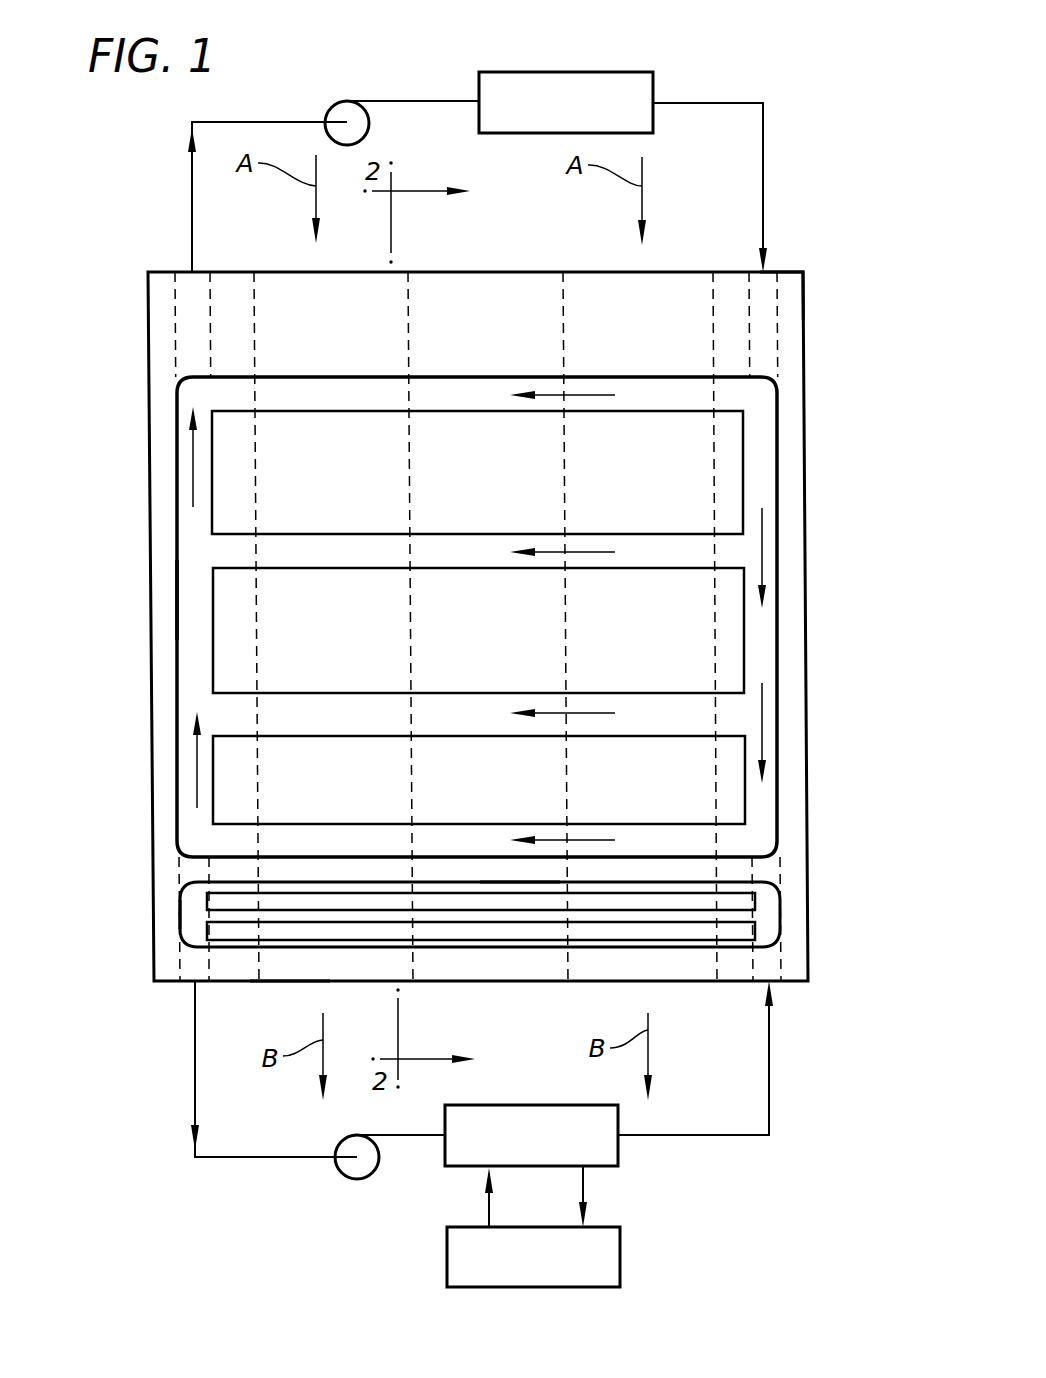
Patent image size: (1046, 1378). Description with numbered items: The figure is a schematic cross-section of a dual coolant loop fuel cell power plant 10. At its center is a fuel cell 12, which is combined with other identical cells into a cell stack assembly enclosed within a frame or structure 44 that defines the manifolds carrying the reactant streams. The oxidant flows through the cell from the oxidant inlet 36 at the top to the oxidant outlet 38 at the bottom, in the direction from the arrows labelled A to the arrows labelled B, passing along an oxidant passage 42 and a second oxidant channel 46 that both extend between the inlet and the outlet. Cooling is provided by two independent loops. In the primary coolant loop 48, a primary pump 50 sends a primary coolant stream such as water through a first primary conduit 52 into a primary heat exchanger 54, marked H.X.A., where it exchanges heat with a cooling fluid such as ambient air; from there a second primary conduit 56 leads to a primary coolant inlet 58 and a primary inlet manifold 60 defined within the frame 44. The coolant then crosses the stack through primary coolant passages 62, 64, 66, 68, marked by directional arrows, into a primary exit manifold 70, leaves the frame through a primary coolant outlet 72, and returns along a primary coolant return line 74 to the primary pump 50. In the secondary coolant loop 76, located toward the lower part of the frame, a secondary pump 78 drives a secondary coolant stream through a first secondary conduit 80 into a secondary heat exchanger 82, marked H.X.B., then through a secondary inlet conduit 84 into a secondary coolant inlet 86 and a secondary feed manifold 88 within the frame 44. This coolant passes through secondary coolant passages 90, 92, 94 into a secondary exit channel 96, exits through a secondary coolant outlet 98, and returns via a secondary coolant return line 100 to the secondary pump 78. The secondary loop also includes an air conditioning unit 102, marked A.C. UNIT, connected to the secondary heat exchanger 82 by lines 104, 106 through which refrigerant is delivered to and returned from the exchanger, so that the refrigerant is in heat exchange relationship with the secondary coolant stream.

The dual coolant loop fuel cell power plant 10 is at (825, 130).
The fuel cell 12 is at (505, 285).
The oxidant inlet 36 is at (409, 272).
The oxidant outlet 38 is at (287, 981).
The oxidant passage 42 is at (305, 298).
The frame or structure 44 is at (797, 290).
The second oxidant channel 46 is at (650, 298).
The primary coolant loop 48 is at (415, 58).
The primary pump 50 is at (338, 106).
The first primary conduit 52 is at (412, 102).
The primary heat exchanger 54 is at (608, 72).
The second primary conduit 56 is at (763, 128).
The primary coolant inlet 58 is at (763, 332).
The primary inlet manifold 60 is at (765, 632).
The primary coolant passage 62 is at (666, 400).
The primary coolant passage 64 is at (663, 553).
The primary coolant passage 66 is at (655, 713).
The primary coolant passage 68 is at (665, 842).
The primary exit manifold 70 is at (193, 587).
The primary coolant outlet 72 is at (189, 299).
The primary coolant return line 74 is at (191, 191).
The secondary coolant loop 76 is at (325, 1215).
The secondary pump 78 is at (340, 1140).
The first secondary conduit 80 is at (400, 1137).
The secondary heat exchanger 82 is at (520, 1105).
The secondary inlet conduit 84 is at (770, 1100).
The secondary coolant inlet 86 is at (773, 967).
The secondary feed manifold 88 is at (768, 920).
The secondary coolant passage 90 is at (613, 945).
The secondary coolant passage 92 is at (677, 917).
The secondary coolant passage 94 is at (515, 888).
The secondary exit channel 96 is at (192, 920).
The secondary coolant outlet 98 is at (188, 968).
The secondary coolant return line 100 is at (195, 1043).
The air conditioning unit 102 is at (620, 1252).
The air conditioning supply line 104 is at (485, 1208).
The air conditioning return line 106 is at (585, 1178).